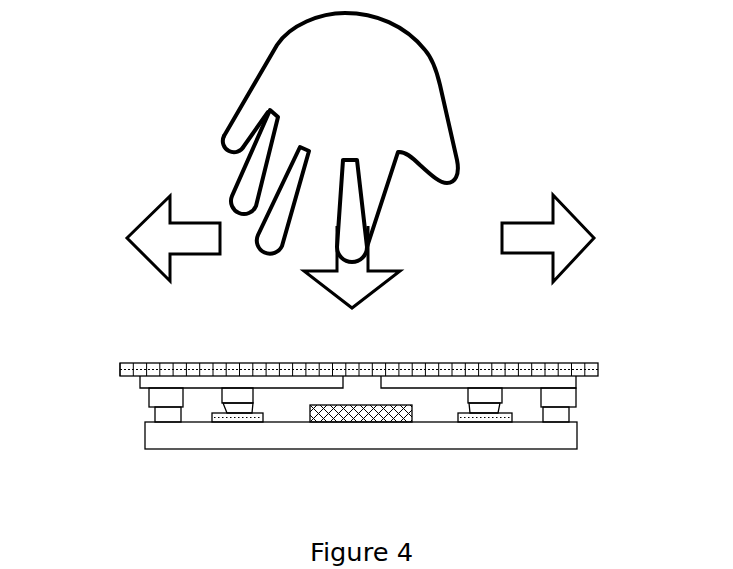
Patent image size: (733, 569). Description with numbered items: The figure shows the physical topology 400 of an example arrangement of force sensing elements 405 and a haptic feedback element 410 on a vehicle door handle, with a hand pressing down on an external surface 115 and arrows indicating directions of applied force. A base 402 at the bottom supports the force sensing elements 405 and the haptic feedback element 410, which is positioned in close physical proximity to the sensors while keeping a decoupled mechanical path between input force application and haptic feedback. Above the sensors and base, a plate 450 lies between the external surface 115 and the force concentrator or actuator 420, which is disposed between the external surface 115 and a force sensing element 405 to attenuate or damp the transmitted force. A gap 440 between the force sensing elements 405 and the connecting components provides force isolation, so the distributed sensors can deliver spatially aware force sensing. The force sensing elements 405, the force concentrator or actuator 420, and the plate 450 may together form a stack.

The physical topology 400 is at (66, 351).
The external surface 115 is at (503, 363).
The plate 450 is at (577, 381).
The gap 440 is at (382, 357).
The force concentrator or actuator 420 is at (220, 395).
The force sensing element 405 is at (238, 423).
The haptic feedback element 410 is at (362, 425).
The base 402 is at (552, 437).